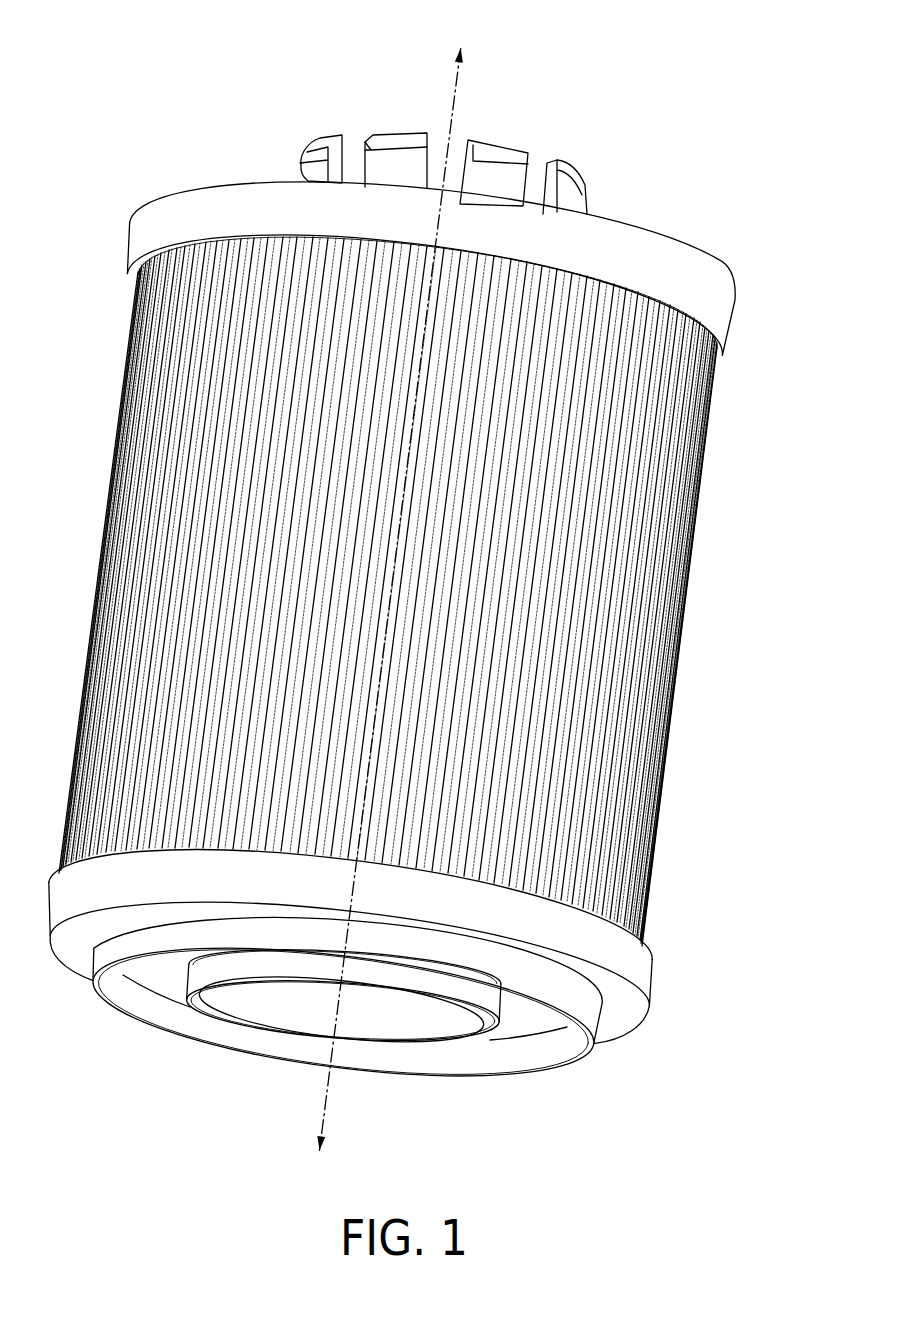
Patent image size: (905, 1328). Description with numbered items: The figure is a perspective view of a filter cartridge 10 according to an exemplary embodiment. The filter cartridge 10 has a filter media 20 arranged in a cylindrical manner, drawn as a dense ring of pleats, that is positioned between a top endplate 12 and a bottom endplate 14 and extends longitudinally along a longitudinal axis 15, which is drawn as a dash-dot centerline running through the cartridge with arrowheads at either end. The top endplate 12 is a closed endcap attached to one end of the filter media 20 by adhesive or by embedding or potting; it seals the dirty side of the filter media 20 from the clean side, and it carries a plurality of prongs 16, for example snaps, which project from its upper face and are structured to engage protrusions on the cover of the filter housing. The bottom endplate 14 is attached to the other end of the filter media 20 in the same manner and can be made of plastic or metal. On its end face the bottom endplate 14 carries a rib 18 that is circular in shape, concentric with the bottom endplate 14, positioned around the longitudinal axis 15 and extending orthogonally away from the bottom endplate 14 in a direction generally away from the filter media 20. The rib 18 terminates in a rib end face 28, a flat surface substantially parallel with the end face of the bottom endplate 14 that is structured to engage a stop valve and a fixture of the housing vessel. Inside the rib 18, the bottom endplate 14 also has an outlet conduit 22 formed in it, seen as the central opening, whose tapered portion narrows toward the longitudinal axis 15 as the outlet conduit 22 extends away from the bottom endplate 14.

The filter cartridge 10 is at (692, 55).
The top endplate 12 is at (694, 246).
The bottom endplate 14 is at (637, 1041).
The longitudinal axis 15 is at (455, 100).
The prongs 16 is at (574, 168).
The rib 18 is at (566, 1074).
The filter media 20 is at (656, 635).
The outlet conduit 22 is at (256, 1036).
The rib end face 28 is at (100, 992).